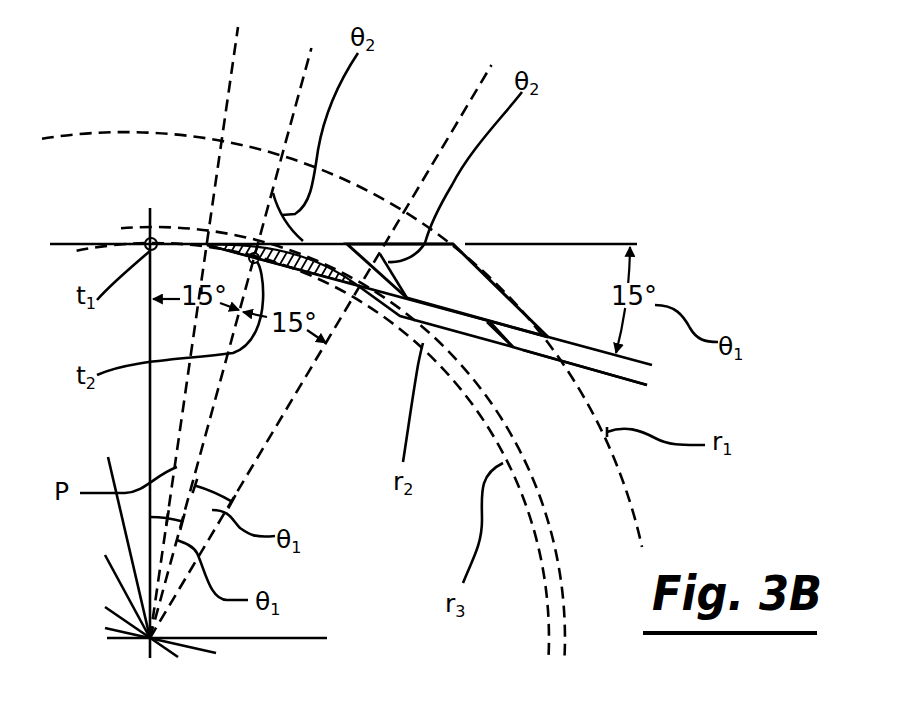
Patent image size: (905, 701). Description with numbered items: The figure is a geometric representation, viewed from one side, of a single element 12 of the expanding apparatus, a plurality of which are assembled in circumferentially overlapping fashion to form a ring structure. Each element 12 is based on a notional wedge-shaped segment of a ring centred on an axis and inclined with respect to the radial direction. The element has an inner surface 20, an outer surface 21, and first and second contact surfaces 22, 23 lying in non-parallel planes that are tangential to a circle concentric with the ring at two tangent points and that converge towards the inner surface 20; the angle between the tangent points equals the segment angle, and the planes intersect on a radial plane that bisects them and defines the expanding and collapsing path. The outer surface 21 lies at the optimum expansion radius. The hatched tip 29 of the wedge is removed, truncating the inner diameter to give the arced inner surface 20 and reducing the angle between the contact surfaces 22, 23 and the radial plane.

The element 12 is at (590, 151).
The inner surface 20 is at (337, 283).
The outer surface 21 is at (513, 293).
The first contact surface 22 is at (487, 323).
The second contact surface 23 is at (372, 243).
The tip 29 is at (247, 243).